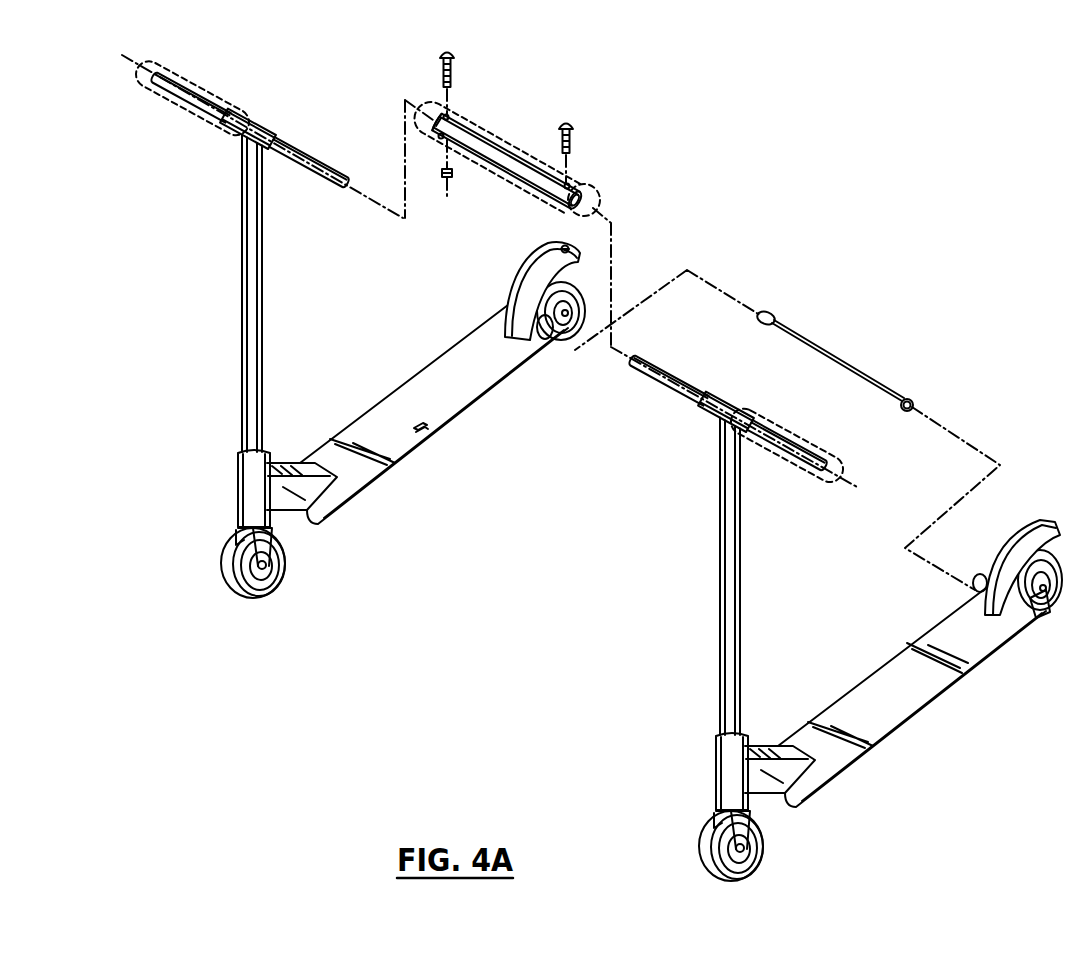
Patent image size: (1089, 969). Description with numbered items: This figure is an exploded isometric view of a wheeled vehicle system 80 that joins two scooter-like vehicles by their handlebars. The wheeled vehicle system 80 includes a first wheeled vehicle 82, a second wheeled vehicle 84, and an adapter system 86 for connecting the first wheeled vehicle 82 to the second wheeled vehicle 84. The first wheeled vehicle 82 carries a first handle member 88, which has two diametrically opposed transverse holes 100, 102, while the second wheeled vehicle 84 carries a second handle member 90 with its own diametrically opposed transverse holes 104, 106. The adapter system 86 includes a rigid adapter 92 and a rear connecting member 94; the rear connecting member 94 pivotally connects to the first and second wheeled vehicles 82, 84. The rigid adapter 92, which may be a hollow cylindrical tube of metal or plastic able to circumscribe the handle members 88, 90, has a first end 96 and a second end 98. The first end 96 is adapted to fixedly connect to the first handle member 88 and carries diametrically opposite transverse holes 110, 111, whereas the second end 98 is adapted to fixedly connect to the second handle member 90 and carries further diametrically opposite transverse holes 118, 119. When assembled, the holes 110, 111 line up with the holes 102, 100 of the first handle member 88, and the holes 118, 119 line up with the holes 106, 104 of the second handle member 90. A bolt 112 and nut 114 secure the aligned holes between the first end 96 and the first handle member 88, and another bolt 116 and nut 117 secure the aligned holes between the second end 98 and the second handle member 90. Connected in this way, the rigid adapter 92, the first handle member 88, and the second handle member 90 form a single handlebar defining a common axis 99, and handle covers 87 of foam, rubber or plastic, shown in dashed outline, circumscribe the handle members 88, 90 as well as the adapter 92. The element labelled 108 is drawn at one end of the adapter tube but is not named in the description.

The wheeled vehicle system 80 is at (937, 223).
The first wheeled vehicle 82 is at (378, 97).
The second wheeled vehicle 84 is at (935, 720).
The adapter system 86 is at (829, 323).
The handle covers 87 is at (176, 58).
The first handle member 88 is at (192, 106).
The second handle member 90 is at (650, 377).
The rigid adapter 92 is at (507, 172).
The rear connecting member 94 is at (875, 385).
The first end 96 is at (434, 113).
The second end 98 is at (587, 176).
The common axis 99 is at (123, 53).
The transverse hole 100 is at (285, 139).
The transverse hole 102 is at (288, 158).
The transverse hole 104 is at (698, 386).
The transverse hole 106 is at (697, 414).
The tube end portion 108 is at (443, 115).
The transverse hole 110 is at (440, 137).
The transverse hole 111 is at (447, 117).
The bolt 112 is at (452, 75).
The nut 114 is at (445, 178).
The bolt 116 is at (568, 126).
The nut 117 is at (537, 246).
The transverse hole 118 is at (565, 247).
The transverse hole 119 is at (567, 186).